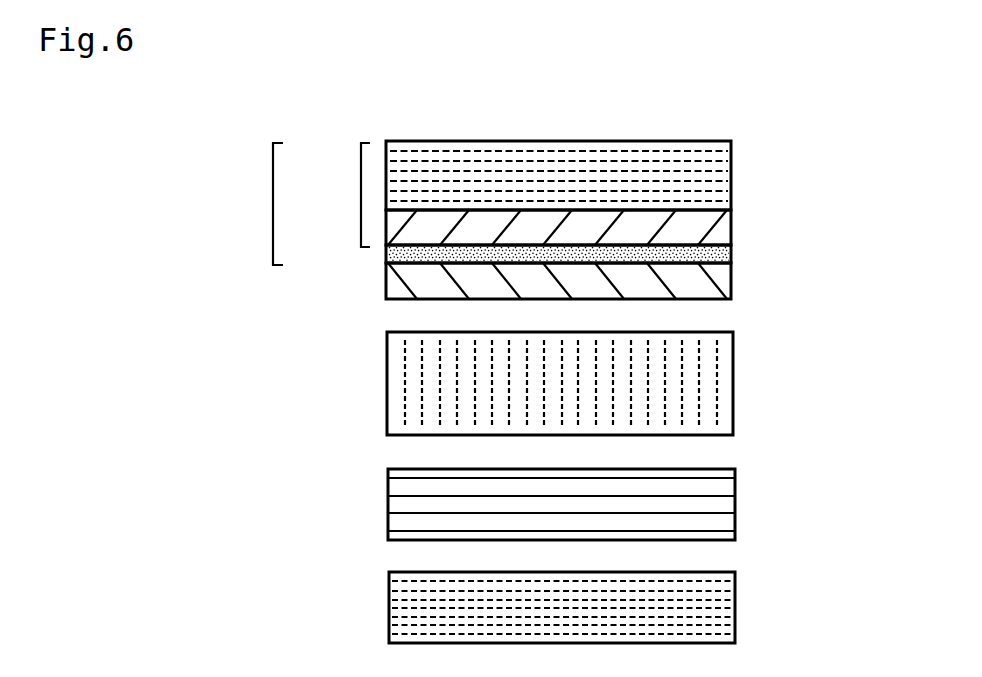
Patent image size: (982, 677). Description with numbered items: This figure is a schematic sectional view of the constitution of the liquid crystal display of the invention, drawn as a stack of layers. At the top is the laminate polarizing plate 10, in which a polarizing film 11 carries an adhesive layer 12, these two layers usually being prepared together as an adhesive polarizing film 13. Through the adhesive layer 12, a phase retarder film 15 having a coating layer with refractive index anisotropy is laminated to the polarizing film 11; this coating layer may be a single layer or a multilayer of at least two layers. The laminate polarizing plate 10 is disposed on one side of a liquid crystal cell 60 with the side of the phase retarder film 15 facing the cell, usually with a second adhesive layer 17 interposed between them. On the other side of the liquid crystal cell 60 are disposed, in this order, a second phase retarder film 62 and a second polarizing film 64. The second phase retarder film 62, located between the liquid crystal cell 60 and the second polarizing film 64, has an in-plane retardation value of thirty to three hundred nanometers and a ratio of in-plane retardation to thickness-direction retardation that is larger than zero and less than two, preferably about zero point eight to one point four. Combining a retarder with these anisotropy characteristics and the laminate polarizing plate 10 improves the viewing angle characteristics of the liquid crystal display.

The laminate polarizing plate 10 is at (245, 204).
The polarizing film 11 is at (731, 153).
The adhesive layer 12 is at (731, 223).
The adhesive polarizing film 13 is at (336, 195).
The phase retarder film 15 is at (731, 250).
The second adhesive layer 17 is at (731, 278).
The liquid crystal cell 60 is at (733, 382).
The second phase retarder film 62 is at (735, 502).
The second polarizing film 64 is at (735, 603).